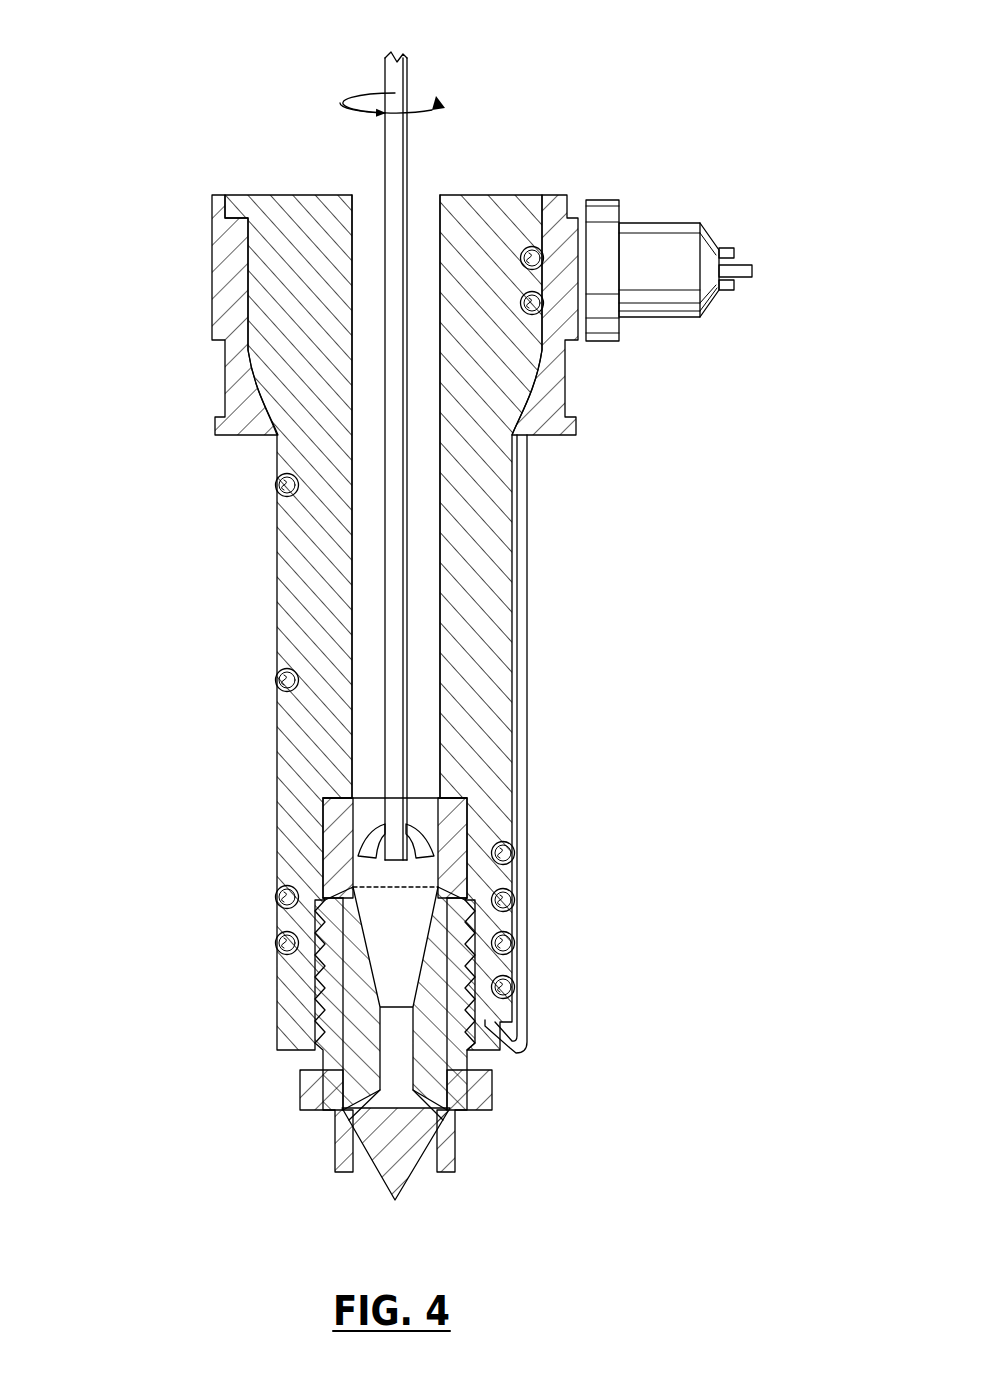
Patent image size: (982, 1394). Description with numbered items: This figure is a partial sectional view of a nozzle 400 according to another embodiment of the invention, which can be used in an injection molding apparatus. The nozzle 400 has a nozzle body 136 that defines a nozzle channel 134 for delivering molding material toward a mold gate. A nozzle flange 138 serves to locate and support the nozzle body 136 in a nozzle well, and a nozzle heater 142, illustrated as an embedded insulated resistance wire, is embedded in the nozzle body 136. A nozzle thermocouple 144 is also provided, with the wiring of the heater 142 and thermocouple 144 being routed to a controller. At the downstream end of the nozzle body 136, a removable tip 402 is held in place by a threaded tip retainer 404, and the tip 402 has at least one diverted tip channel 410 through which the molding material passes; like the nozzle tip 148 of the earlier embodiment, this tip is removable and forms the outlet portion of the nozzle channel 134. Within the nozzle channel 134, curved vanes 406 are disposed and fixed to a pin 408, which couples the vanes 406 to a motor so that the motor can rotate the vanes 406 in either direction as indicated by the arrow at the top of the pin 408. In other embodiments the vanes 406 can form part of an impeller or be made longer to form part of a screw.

The nozzle 400 is at (578, 112).
The nozzle channel 134 is at (422, 497).
The nozzle body 136 is at (478, 592).
The nozzle flange 138 is at (212, 372).
The nozzle heater 142 is at (283, 683).
The nozzle thermocouple 144 is at (530, 728).
The nozzle tip 148 is at (660, 316).
The removable tip 402 is at (355, 1088).
The threaded tip retainer 404 is at (480, 1092).
The curved vanes 406 is at (380, 833).
The pin 408 is at (393, 165).
The diverted tip channel 410 is at (420, 1120).